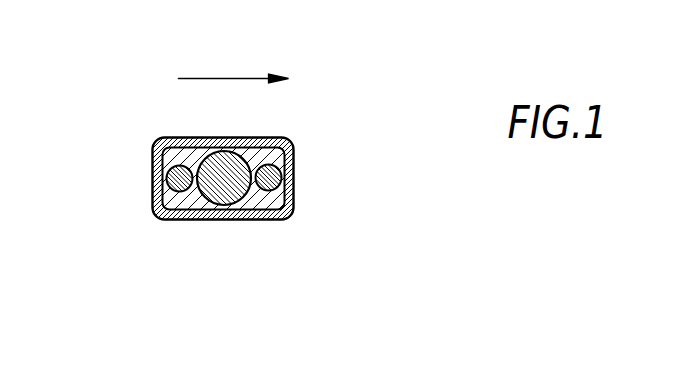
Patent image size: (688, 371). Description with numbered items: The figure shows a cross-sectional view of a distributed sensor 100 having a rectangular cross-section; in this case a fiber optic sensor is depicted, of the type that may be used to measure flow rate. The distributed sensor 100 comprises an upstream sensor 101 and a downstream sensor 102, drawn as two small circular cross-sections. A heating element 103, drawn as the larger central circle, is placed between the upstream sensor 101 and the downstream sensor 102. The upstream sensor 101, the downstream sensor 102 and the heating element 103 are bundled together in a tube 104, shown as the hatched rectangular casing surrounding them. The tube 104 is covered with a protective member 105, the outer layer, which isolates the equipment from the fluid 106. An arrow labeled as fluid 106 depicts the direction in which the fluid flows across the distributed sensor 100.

The distributed sensor 100 is at (138, 92).
The upstream sensor 101 is at (166, 180).
The downstream sensor 102 is at (283, 183).
The heating element 103 is at (225, 192).
The tube 104 is at (291, 157).
The protective member 105 is at (257, 143).
The fluid 106 is at (225, 78).